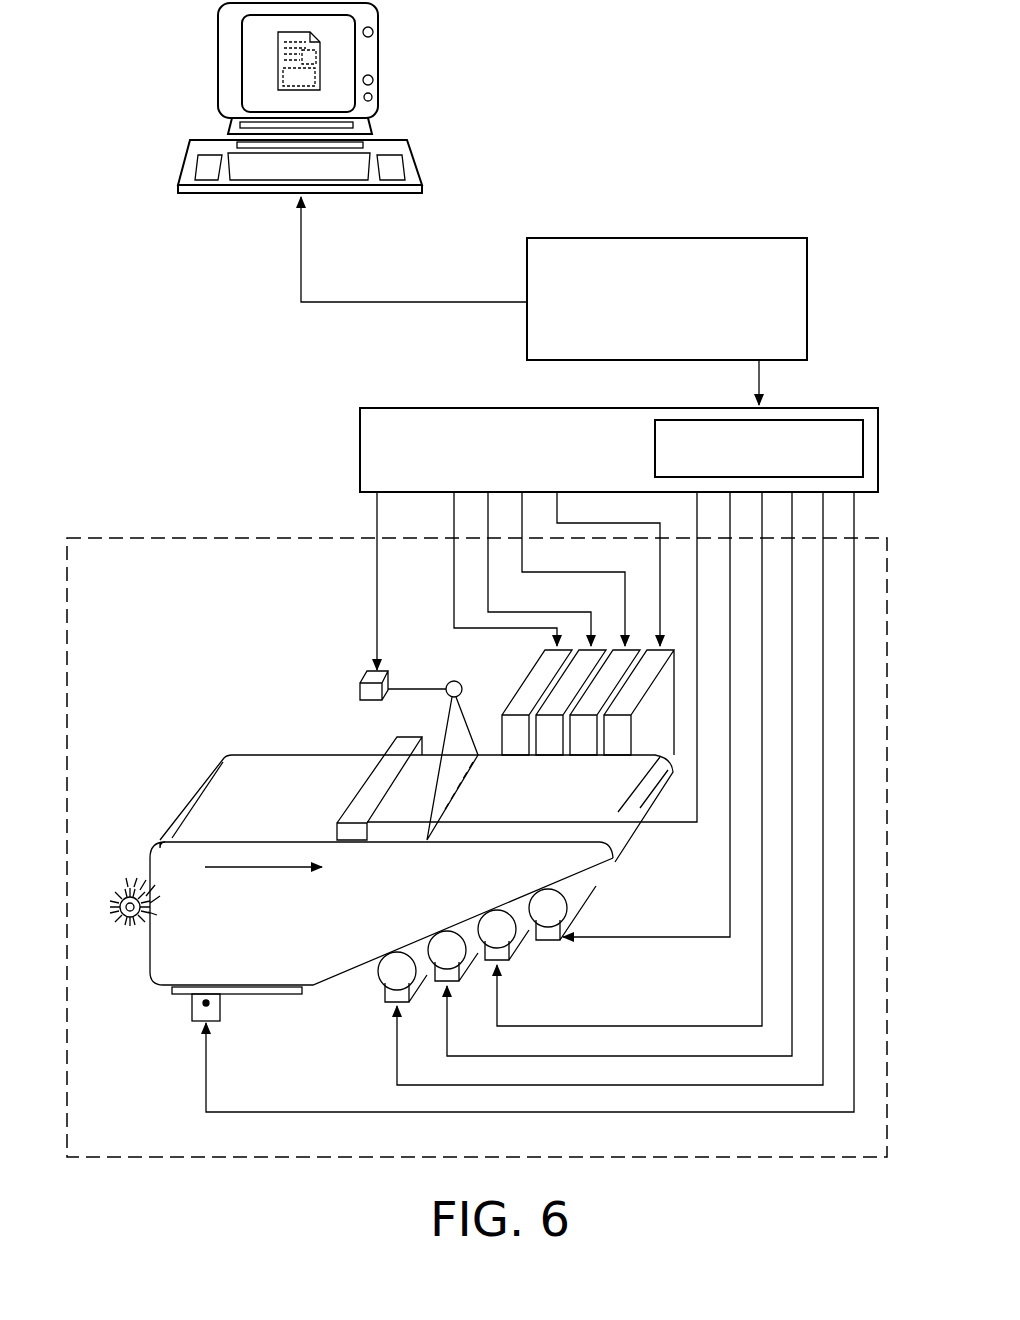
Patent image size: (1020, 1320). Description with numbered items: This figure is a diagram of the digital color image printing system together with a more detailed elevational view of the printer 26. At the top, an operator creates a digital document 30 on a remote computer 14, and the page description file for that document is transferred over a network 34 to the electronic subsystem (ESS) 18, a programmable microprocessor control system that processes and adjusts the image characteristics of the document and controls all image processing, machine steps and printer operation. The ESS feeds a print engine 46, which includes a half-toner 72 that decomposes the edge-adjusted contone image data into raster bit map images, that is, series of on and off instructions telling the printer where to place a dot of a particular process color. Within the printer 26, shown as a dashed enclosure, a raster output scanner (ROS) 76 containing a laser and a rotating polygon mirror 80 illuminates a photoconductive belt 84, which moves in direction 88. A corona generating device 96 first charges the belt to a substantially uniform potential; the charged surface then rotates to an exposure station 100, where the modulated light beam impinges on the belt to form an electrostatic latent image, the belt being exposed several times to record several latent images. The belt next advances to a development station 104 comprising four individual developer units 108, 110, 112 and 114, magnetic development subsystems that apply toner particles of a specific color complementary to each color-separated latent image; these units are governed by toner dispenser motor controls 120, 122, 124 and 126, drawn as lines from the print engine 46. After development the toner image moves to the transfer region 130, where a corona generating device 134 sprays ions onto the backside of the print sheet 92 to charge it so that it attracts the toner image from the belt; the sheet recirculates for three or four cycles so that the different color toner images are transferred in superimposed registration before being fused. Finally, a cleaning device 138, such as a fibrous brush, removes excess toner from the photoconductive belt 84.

The remote computer 14 is at (393, 68).
The digital document 30 is at (278, 51).
The network 34 is at (302, 256).
The electronic subsystem (ESS) 18 is at (807, 253).
The print engine 46 is at (360, 446).
The half-toner 72 is at (863, 449).
The printer 26 is at (868, 530).
The raster output scanner (ROS) 76 is at (364, 678).
The rotating polygon mirror 80 is at (462, 680).
The photoconductive belt 84 is at (272, 755).
The direction of belt movement 88 is at (262, 875).
The print sheet 92 is at (237, 994).
The corona generating device 96 is at (397, 747).
The exposure station 100 is at (447, 811).
The development station 104 is at (550, 984).
The developer unit 108 is at (548, 903).
The developer unit 110 is at (497, 922).
The developer unit 112 is at (447, 944).
The developer unit 114 is at (396, 960).
The toner dispenser motor control 120 is at (497, 630).
The toner dispenser motor control 122 is at (586, 610).
The toner dispenser motor control 124 is at (616, 572).
The toner dispenser motor control 126 is at (652, 524).
The transfer region 130 is at (234, 1036).
The corona generating device 134 is at (192, 1008).
The cleaning device 138 is at (118, 896).